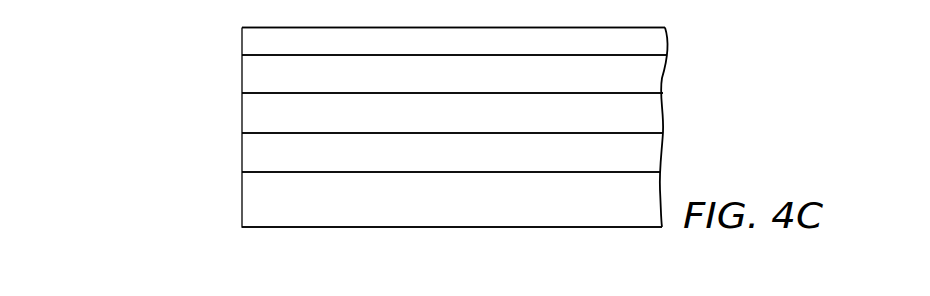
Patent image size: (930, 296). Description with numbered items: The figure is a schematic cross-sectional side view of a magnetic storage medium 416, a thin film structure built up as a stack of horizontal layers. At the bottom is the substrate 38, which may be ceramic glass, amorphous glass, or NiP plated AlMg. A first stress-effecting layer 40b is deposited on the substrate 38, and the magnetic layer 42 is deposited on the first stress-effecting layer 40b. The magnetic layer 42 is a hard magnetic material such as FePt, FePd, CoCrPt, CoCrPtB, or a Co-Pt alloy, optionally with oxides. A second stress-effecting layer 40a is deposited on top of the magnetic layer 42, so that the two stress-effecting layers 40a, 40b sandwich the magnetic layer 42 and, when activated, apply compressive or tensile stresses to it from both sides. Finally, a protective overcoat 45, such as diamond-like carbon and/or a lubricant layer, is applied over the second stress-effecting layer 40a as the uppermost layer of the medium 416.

The magnetic storage medium 416 is at (146, 103).
The protective overcoat 45 is at (252, 41).
The second stress-effecting layer 40a is at (252, 76).
The magnetic layer 42 is at (252, 114).
The first stress-effecting layer 40b is at (252, 155).
The substrate 38 is at (252, 195).